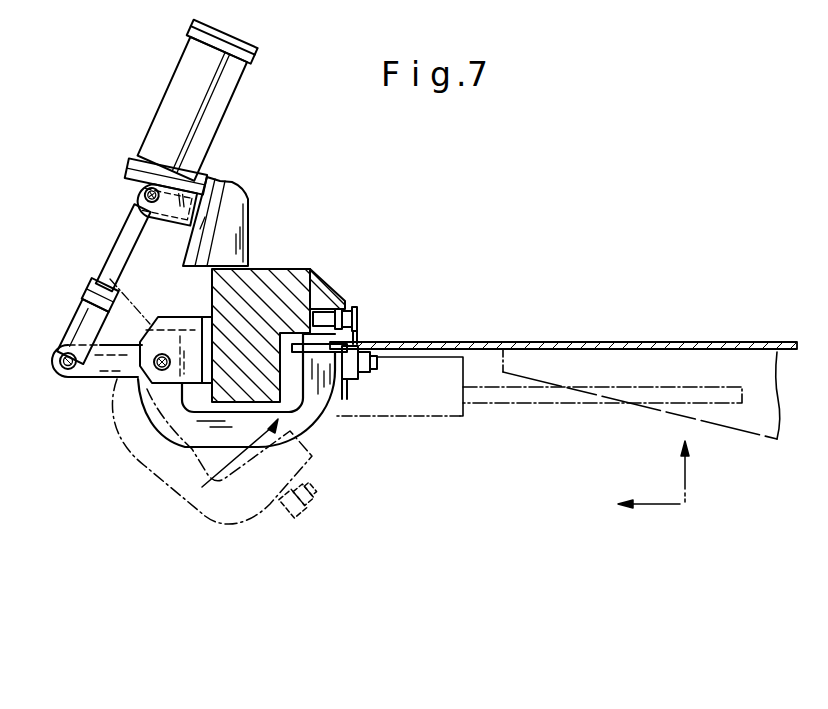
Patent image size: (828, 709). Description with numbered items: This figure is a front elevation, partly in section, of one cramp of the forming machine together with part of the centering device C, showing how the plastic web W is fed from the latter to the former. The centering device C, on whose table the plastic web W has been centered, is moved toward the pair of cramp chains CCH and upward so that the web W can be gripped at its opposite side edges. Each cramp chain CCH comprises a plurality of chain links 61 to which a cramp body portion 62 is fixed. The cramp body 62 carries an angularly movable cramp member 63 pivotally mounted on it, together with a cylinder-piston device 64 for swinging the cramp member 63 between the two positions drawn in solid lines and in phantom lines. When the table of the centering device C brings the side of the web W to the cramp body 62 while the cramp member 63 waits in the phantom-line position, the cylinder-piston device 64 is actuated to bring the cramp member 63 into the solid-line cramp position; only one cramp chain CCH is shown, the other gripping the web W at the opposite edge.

The cylinder-piston device 64 is at (178, 99).
The cramp body portion 62 is at (295, 283).
The chain links 61 is at (337, 310).
The cramp member 63 is at (315, 426).
The cramp chains CCH is at (282, 268).
The plastic web W is at (618, 342).
The centering device C is at (768, 426).